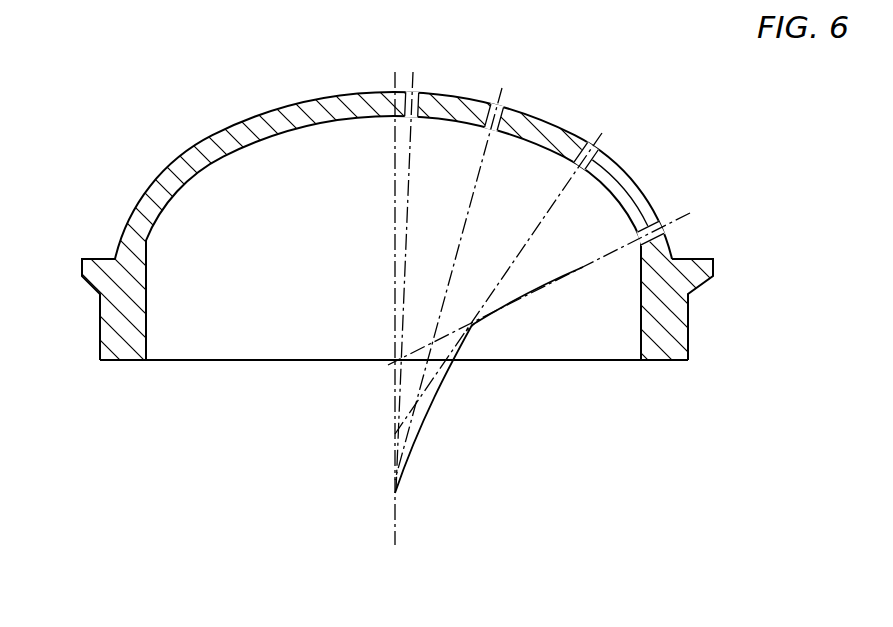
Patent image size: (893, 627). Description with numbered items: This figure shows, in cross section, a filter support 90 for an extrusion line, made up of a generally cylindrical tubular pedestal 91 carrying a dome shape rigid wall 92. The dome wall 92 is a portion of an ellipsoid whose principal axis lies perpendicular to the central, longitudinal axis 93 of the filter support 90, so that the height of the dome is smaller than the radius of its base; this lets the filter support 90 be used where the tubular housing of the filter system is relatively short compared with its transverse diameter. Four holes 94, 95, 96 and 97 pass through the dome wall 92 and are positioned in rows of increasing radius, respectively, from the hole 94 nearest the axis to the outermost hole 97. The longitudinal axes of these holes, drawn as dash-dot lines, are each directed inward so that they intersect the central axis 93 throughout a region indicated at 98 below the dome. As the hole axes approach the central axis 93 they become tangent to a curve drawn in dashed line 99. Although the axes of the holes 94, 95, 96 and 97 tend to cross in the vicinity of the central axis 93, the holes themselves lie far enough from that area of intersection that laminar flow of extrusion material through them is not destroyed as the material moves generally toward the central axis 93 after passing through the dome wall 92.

The filter support 90 is at (217, 110).
The tubular pedestal 91 is at (112, 328).
The dome shape rigid wall 92 is at (172, 182).
The central longitudinal axis 93 is at (393, 211).
The hole 94 is at (416, 92).
The hole 95 is at (505, 100).
The hole 96 is at (595, 143).
The hole 97 is at (658, 219).
The region of intersection 98 is at (376, 462).
The curve 99 is at (477, 333).